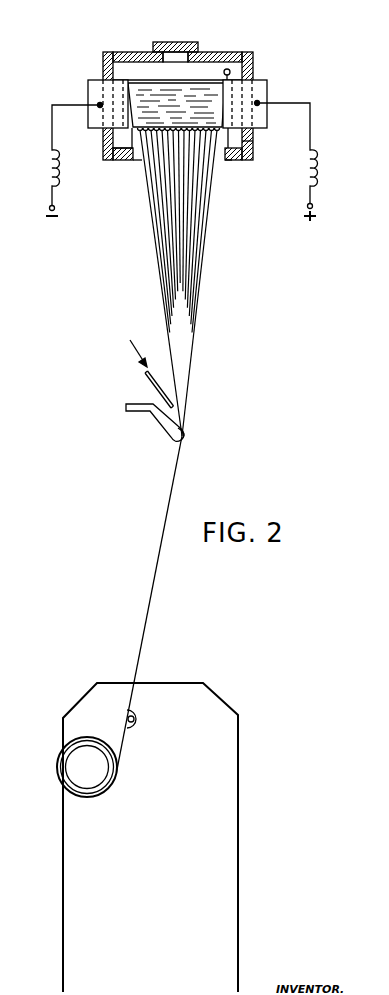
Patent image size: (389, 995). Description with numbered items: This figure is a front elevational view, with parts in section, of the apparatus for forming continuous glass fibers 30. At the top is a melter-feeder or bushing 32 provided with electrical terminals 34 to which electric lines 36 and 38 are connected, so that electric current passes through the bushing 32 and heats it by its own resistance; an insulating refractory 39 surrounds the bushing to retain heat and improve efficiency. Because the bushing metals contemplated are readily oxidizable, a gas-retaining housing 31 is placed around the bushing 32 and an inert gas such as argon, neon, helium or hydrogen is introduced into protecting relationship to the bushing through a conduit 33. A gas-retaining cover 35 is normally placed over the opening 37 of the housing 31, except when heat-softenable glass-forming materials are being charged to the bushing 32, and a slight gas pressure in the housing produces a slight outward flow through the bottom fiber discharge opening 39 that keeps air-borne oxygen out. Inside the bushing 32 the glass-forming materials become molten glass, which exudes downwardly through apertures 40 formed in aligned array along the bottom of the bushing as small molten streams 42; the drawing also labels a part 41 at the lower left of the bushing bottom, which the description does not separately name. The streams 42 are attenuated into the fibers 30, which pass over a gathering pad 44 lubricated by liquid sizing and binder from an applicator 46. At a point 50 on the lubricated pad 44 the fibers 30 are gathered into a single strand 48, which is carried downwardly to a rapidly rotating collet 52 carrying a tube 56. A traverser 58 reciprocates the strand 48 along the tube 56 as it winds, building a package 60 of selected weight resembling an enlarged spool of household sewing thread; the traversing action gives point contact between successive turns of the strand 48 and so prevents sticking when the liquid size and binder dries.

The continuous glass fibers 30 is at (206, 252).
The gas-retaining housing 31 is at (103, 60).
The melter-feeder or bushing 32 is at (135, 82).
The conduit 33 is at (230, 69).
The electrical terminals 34 is at (88, 90).
The gas-retaining cover 35 is at (172, 42).
The electric line 36 is at (50, 122).
The opening 37 is at (165, 53).
The electric line 38 is at (311, 115).
The insulating refractory 39 is at (253, 141).
The apertures 40 is at (138, 128).
The spinneret 41 is at (136, 160).
The small molten streams 42 is at (220, 128).
The gathering pad 44 is at (166, 427).
The applicator 46 is at (147, 379).
The strand 48 is at (171, 492).
The point 50 is at (197, 432).
The collet 52 is at (66, 783).
The tube 56 is at (61, 773).
The traverser 58 is at (146, 713).
The package 60 is at (58, 752).